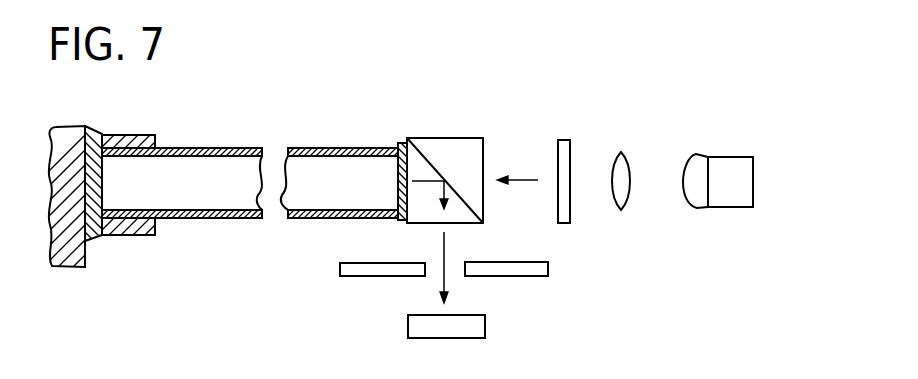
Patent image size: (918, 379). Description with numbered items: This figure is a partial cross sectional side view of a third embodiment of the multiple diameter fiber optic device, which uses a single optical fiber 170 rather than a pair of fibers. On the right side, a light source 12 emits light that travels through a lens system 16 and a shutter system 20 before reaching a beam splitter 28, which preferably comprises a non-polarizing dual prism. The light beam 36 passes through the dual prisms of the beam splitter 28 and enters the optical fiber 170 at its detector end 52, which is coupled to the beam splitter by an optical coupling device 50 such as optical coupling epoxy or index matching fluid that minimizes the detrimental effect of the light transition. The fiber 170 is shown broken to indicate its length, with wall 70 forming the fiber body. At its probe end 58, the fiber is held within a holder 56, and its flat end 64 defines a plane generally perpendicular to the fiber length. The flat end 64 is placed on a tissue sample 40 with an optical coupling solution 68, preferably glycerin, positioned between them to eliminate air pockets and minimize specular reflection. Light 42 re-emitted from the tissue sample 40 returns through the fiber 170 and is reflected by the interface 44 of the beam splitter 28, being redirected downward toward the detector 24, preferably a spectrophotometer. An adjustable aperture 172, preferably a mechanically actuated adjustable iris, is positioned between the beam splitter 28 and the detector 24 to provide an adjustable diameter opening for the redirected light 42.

The light source 12 is at (733, 170).
The lens system 16 is at (622, 167).
The shutter system 20 is at (563, 140).
The detector 24 is at (477, 325).
The beam splitter 28 is at (457, 150).
The light beam 36 is at (518, 180).
The tissue sample 40 is at (55, 128).
The re-emitted light 42 is at (430, 182).
The interface 44 is at (470, 205).
The optical coupling device 50 is at (403, 143).
The detector end 52 is at (317, 170).
The holder 56 is at (143, 140).
The probe end 58 is at (193, 165).
The flat end 64 is at (102, 172).
The optical coupling solution 68 is at (92, 132).
The tube wall 70 is at (360, 148).
The optical fiber 170 is at (230, 165).
The adjustable aperture 172 is at (358, 276).